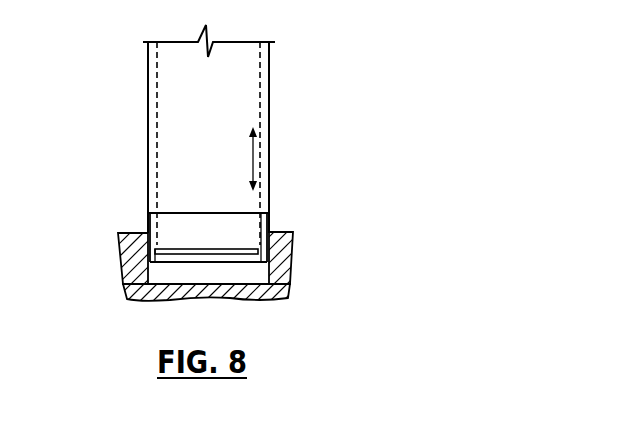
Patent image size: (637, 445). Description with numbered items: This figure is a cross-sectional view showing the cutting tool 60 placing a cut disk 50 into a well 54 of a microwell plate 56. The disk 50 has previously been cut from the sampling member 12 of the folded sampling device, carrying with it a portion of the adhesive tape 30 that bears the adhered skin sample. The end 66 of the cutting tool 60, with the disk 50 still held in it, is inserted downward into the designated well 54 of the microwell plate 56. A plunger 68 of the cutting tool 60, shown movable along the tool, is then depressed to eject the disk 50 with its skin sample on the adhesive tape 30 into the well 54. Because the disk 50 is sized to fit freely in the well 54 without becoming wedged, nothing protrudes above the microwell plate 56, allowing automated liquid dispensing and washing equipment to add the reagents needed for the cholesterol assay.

The cutting tool 60 is at (136, 66).
The end of the cutting tool 66 is at (147, 173).
The plunger 68 is at (259, 97).
The microwell plate 56 is at (148, 217).
The disk 50 is at (252, 235).
The sampling member 12 is at (118, 255).
The adhesive tape 30 is at (287, 287).
The well 54 is at (158, 273).